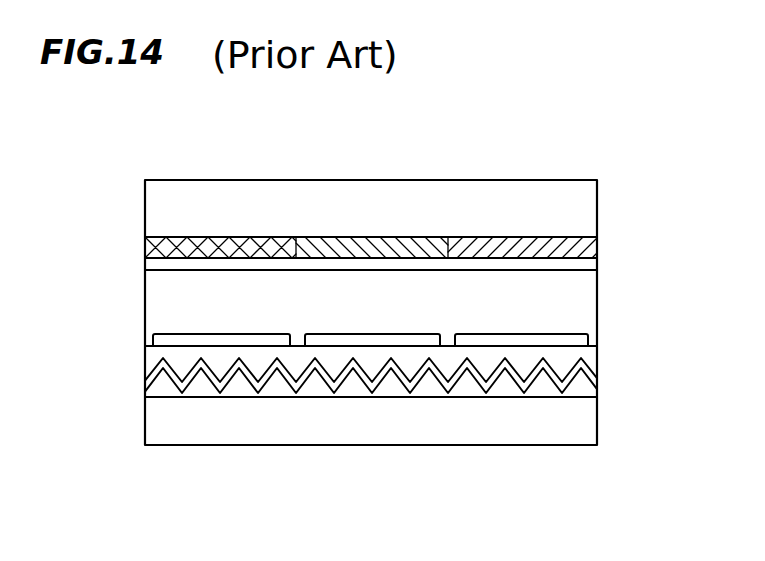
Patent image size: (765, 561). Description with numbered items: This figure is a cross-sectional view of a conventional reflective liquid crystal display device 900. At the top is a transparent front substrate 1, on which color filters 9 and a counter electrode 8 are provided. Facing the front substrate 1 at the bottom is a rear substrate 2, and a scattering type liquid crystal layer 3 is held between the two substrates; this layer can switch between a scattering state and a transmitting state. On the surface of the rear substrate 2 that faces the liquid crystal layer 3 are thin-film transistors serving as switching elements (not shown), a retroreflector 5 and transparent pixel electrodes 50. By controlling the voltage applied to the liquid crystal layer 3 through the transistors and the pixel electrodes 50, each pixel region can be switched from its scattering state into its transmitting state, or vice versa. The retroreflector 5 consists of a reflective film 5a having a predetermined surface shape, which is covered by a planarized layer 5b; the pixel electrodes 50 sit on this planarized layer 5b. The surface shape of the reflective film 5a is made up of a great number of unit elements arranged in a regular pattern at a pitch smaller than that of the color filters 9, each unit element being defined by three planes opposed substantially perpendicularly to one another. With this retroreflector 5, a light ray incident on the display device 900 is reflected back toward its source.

The reflective liquid crystal display device 900 is at (575, 147).
The front substrate 1 is at (295, 190).
The color filters 9 is at (598, 250).
The counter electrode 8 is at (593, 262).
The scattering type liquid crystal layer 3 is at (593, 298).
The pixel electrodes 50 is at (203, 333).
The retroreflector 5 is at (439, 389).
The planarized layer 5b is at (592, 355).
The reflective film 5a is at (592, 378).
The rear substrate 2 is at (329, 435).